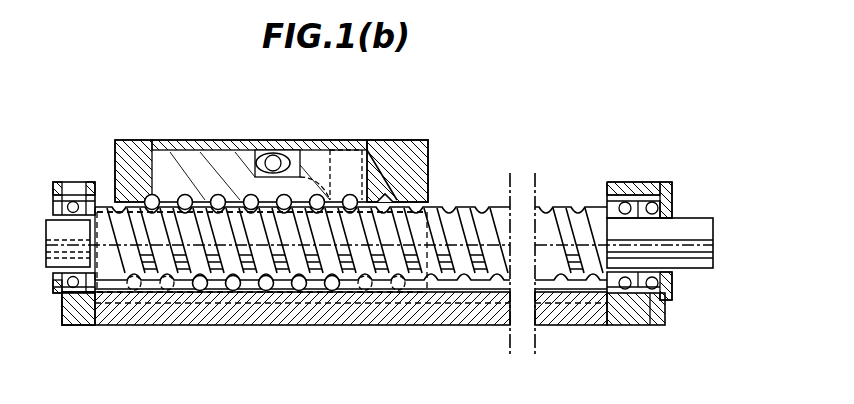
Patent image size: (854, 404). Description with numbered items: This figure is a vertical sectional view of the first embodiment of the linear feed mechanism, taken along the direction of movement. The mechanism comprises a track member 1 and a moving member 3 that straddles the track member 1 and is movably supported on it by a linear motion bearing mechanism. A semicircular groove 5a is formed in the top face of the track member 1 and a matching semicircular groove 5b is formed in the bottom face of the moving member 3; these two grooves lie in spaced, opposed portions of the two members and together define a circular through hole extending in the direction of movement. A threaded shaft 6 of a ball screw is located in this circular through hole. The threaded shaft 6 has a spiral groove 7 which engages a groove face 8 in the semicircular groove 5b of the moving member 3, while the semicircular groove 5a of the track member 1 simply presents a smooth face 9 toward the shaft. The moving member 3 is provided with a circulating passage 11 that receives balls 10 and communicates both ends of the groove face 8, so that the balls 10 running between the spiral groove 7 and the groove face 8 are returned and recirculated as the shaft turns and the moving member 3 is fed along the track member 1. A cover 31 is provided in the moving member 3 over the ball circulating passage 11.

The track member 1 is at (419, 315).
The moving member 3 is at (386, 140).
The semicircular groove 5a is at (165, 296).
The semicircular groove 5b is at (152, 194).
The threaded shaft 6 is at (557, 210).
The spiral groove 7 is at (453, 210).
The groove face 8 is at (400, 150).
The smooth face 9 is at (370, 290).
The balls 10 is at (220, 195).
The circulating passage 11 is at (318, 150).
The cover 31 is at (343, 148).